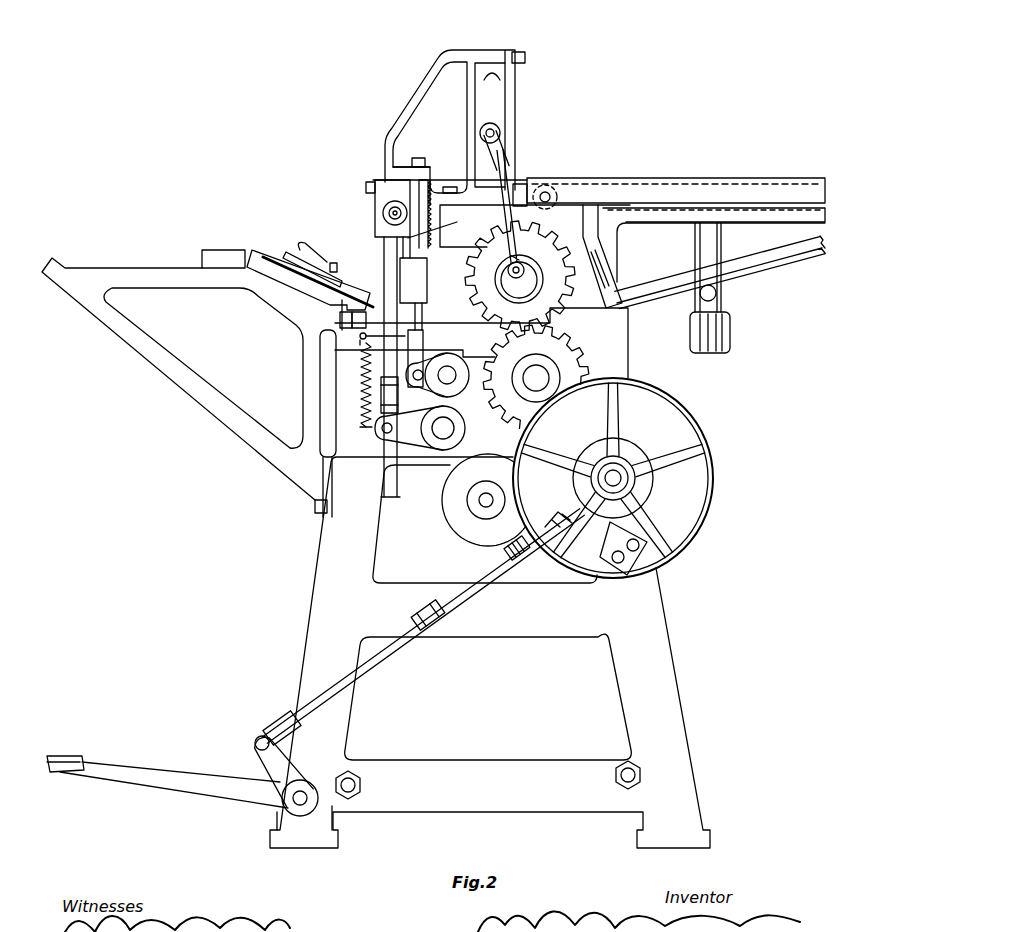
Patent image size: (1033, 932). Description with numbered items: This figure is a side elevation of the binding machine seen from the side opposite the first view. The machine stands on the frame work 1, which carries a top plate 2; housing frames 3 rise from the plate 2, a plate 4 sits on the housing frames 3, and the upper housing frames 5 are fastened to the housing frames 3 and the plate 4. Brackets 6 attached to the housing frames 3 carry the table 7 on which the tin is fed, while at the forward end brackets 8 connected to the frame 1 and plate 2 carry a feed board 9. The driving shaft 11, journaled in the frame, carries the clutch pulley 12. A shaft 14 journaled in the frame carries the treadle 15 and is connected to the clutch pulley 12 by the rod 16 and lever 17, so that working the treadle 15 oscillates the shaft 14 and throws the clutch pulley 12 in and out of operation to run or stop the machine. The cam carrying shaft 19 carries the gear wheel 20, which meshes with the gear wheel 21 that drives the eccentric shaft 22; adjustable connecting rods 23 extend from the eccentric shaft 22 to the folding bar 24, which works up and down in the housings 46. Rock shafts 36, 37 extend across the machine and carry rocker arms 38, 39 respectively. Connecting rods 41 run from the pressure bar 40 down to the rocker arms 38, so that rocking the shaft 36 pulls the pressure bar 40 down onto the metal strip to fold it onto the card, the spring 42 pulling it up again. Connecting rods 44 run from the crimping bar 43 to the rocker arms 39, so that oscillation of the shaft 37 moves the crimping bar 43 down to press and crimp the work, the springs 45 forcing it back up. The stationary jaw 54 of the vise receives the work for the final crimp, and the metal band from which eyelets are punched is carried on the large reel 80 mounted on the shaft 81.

The frame work 1 is at (660, 672).
The top plate 2 is at (630, 335).
The housing frames 3 is at (373, 205).
The plate 4 is at (388, 243).
The upper housing frames 5 is at (408, 108).
The brackets 6 is at (782, 262).
The table 7 is at (778, 193).
The brackets 8 is at (205, 398).
The feed board 9 is at (240, 258).
The driving shaft 11 is at (622, 478).
The clutch pulley 12 is at (710, 503).
The shaft 14 is at (307, 800).
The treadle 15 is at (177, 787).
The rod 16 is at (437, 623).
The lever 17 is at (283, 780).
The shaft 19 is at (548, 387).
The gear wheel 20 is at (513, 410).
The gear wheel 21 is at (480, 287).
The eccentric shaft 22 is at (530, 284).
The adjustable connecting rods 23 is at (508, 192).
The folding bar 24 is at (495, 113).
The rock shaft 36 is at (440, 380).
The rock shaft 37 is at (447, 427).
The rocker arms 38 is at (453, 342).
The rocker arms 39 is at (400, 433).
The pressure bar 40 is at (412, 278).
The connecting rods 41 is at (410, 312).
The spring 42 is at (435, 167).
The crimping bar 43 is at (383, 213).
The connecting rods 44 is at (380, 400).
The springs 45 is at (363, 375).
The housings 46 is at (487, 78).
The stationary jaw 54 is at (342, 318).
The reel 80 is at (473, 532).
The shaft 81 is at (478, 500).